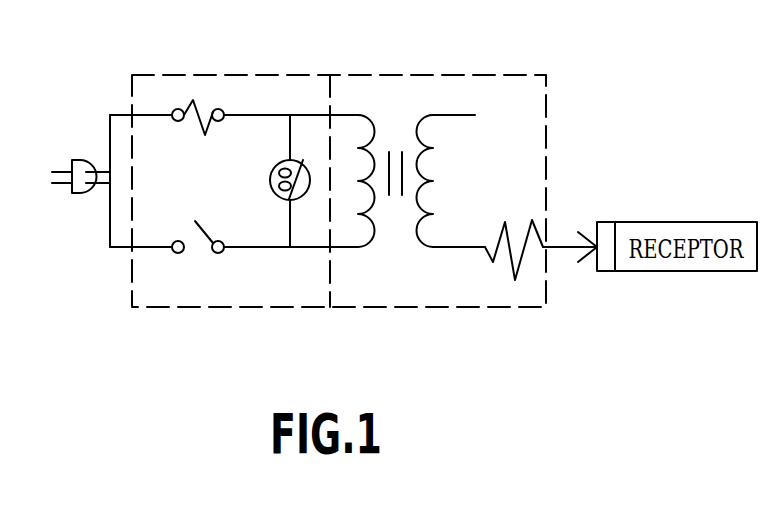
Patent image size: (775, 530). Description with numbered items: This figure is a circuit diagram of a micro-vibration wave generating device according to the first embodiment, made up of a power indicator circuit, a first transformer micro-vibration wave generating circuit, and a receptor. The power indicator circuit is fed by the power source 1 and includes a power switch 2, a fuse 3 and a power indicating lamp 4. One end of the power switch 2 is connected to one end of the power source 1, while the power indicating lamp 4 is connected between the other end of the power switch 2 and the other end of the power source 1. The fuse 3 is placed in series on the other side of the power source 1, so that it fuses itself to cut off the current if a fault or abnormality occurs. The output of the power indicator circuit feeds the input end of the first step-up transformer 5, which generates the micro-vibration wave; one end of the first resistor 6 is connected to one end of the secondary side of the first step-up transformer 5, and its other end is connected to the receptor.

The power source 1 is at (83, 160).
The power switch 2 is at (220, 255).
The fuse 3 is at (218, 105).
The power indicating lamp 4 is at (303, 160).
The first step-up transformer 5 is at (418, 117).
The first resistor 6 is at (520, 265).